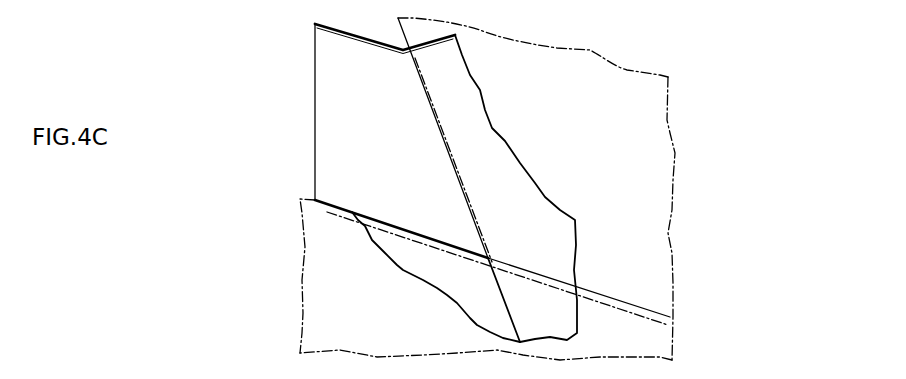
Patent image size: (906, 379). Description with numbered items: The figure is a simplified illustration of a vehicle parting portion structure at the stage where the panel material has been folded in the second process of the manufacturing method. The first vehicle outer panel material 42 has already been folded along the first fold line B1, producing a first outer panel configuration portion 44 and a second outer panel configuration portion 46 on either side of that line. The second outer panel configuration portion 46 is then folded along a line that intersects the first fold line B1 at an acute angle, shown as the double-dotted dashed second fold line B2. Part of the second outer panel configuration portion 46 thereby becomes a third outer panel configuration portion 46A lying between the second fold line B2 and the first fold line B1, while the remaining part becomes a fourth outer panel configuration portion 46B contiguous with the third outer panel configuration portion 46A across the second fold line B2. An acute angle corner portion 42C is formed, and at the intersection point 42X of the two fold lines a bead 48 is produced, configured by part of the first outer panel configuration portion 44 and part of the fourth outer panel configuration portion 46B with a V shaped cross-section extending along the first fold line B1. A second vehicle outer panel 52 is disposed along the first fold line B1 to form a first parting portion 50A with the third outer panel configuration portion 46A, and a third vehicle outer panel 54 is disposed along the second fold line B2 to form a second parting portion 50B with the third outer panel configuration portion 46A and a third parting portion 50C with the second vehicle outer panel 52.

The first vehicle outer panel material 42 is at (257, 50).
The acute angle corner portion 42C is at (497, 240).
The intersection point 42X is at (490, 256).
The first outer panel configuration portion 44 is at (470, 98).
The second outer panel configuration portion 46 is at (290, 135).
The third outer panel configuration portion 46A is at (313, 158).
The fourth outer panel configuration portion 46B is at (413, 250).
The bead 48 is at (488, 260).
The first parting portion 50A is at (417, 105).
The second parting portion 50B is at (348, 198).
The third parting portion 50C is at (627, 290).
The second vehicle outer panel 52 is at (657, 95).
The third vehicle outer panel 54 is at (650, 343).
The first fold line B1 is at (442, 145).
The second fold line B2 is at (363, 224).